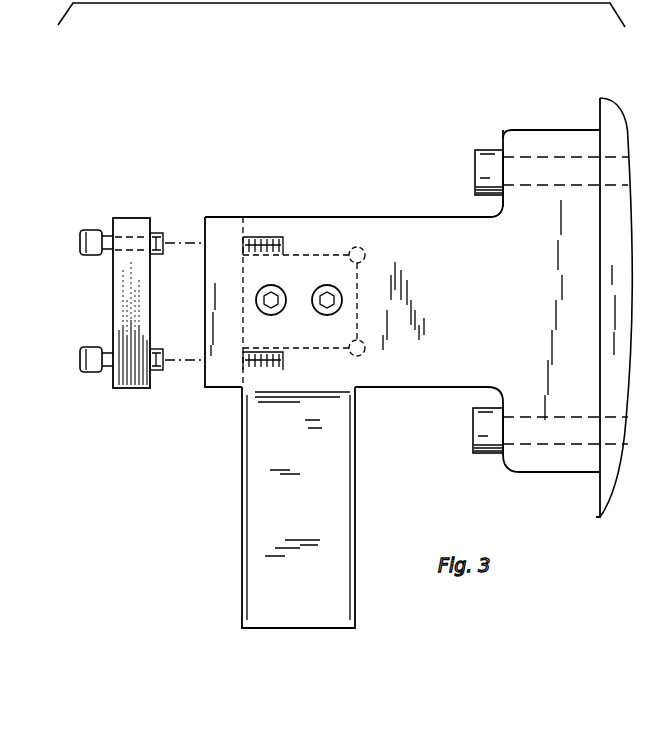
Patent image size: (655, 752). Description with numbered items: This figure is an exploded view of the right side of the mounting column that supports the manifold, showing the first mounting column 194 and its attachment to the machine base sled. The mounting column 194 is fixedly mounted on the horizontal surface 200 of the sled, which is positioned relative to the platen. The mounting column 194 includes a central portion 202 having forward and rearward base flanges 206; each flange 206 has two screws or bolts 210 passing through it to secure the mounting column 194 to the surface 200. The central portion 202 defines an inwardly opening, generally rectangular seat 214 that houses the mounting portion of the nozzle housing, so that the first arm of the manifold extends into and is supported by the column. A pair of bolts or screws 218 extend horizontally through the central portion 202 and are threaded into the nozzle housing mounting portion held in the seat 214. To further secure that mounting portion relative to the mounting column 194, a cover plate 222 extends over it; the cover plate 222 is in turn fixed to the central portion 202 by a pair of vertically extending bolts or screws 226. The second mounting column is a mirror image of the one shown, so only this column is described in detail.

The first mounting column 194 is at (229, 203).
The horizontal surface 200 is at (600, 100).
The central portion 202 is at (430, 218).
The base flanges 206 is at (548, 130).
The screws or bolts 210 is at (488, 150).
The seat 214 is at (304, 270).
The bolts or screws 218 is at (318, 330).
The cover plate 222 is at (133, 389).
The vertically extending bolts or screws 226 is at (90, 348).